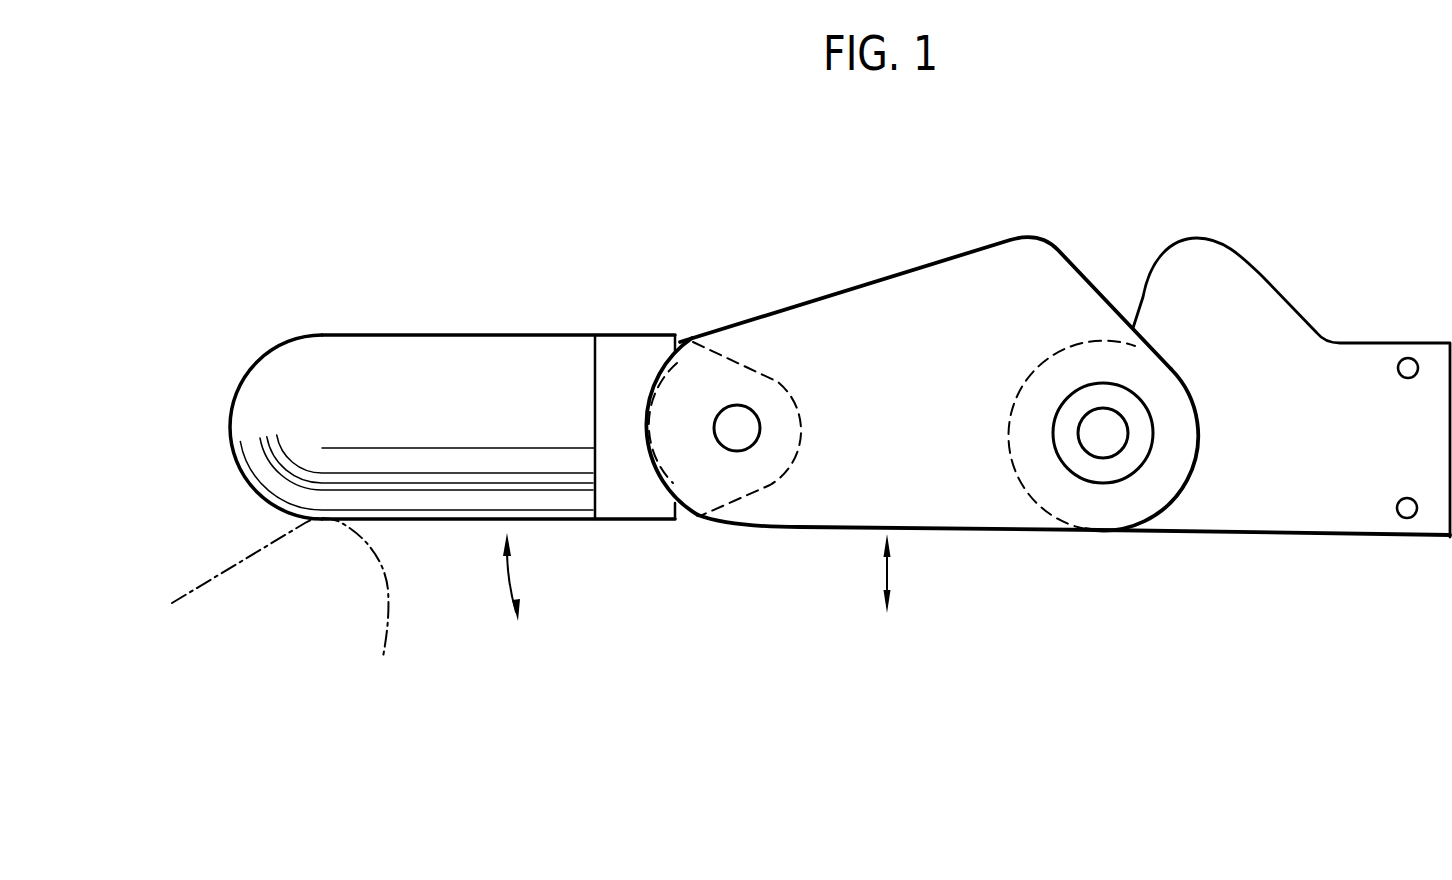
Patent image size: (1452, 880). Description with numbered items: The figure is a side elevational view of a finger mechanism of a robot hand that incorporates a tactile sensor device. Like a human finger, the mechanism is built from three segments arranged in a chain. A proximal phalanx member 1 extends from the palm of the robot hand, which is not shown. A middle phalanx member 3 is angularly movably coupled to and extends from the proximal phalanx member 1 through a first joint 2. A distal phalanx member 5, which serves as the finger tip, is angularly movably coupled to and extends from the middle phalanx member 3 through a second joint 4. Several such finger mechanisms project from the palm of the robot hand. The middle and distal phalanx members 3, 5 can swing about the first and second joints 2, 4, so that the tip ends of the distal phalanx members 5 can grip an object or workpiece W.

The proximal phalanx member 1 is at (1230, 305).
The first joint 2 is at (1112, 432).
The middle phalanx member 3 is at (903, 320).
The second joint 4 is at (733, 428).
The distal phalanx member 5 is at (535, 332).
The workpiece W is at (237, 557).